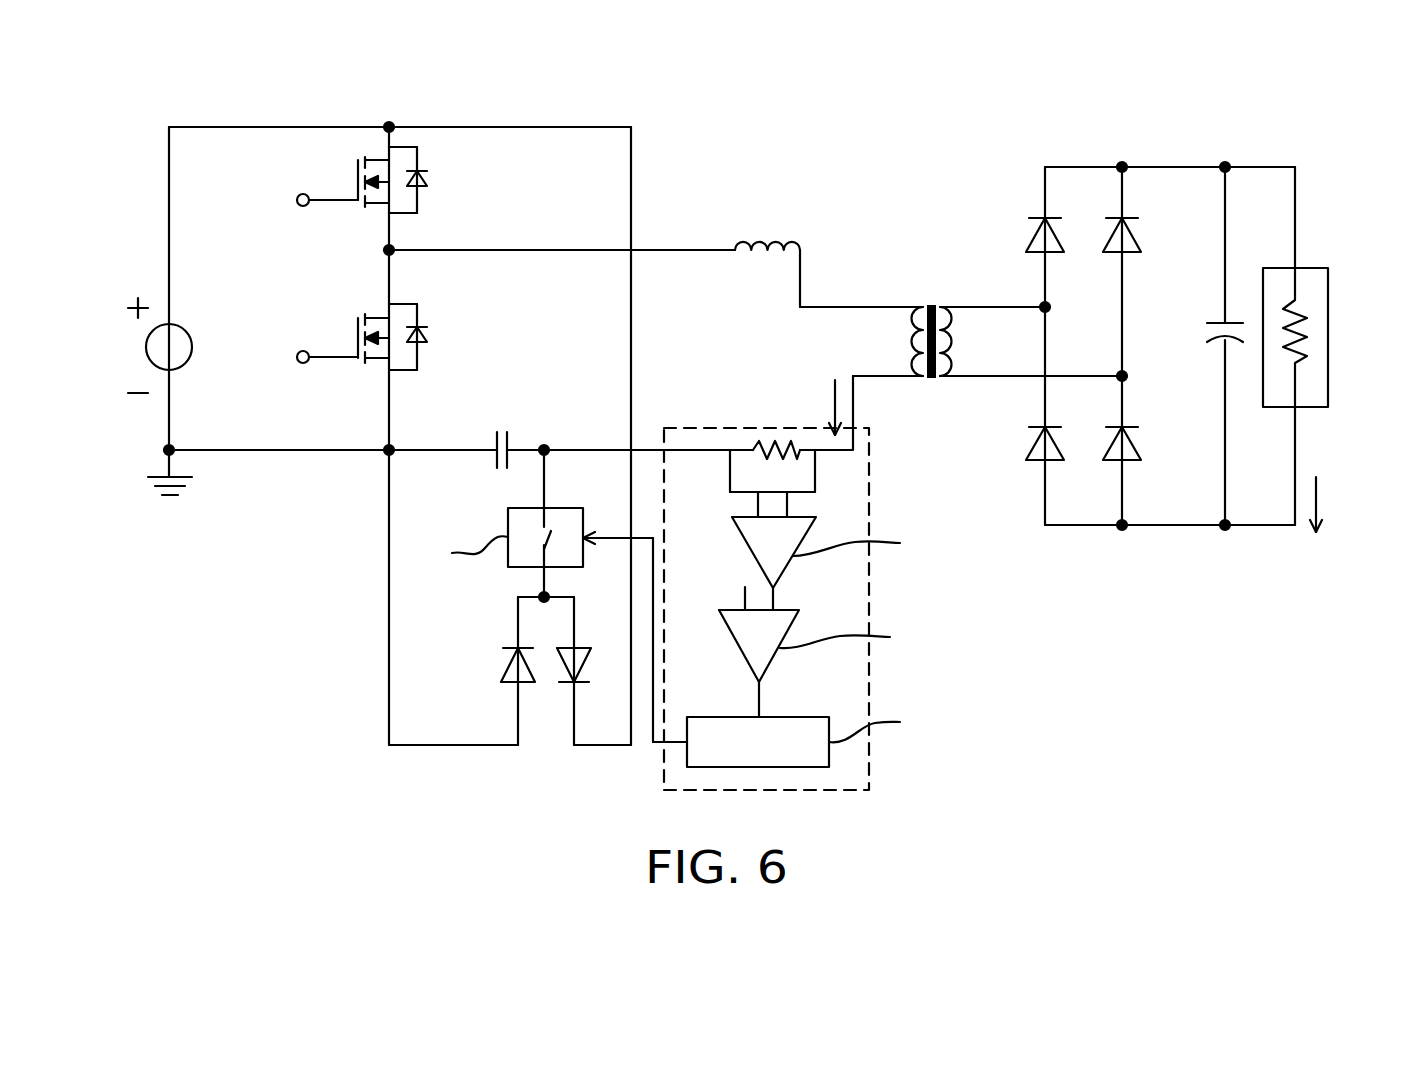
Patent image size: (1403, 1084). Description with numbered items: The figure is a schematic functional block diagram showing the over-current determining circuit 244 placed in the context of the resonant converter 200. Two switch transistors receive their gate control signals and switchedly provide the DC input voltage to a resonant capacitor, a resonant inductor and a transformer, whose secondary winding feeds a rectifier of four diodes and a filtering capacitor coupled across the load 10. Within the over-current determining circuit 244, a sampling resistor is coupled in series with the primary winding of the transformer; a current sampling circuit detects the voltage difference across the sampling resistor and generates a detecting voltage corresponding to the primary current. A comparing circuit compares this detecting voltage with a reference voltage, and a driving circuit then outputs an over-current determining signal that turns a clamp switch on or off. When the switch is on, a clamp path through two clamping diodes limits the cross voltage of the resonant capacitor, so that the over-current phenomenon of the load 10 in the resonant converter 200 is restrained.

The load 10 is at (1328, 310).
The resonant converter 200 is at (1346, 693).
The over-current determining circuit 244 is at (869, 673).